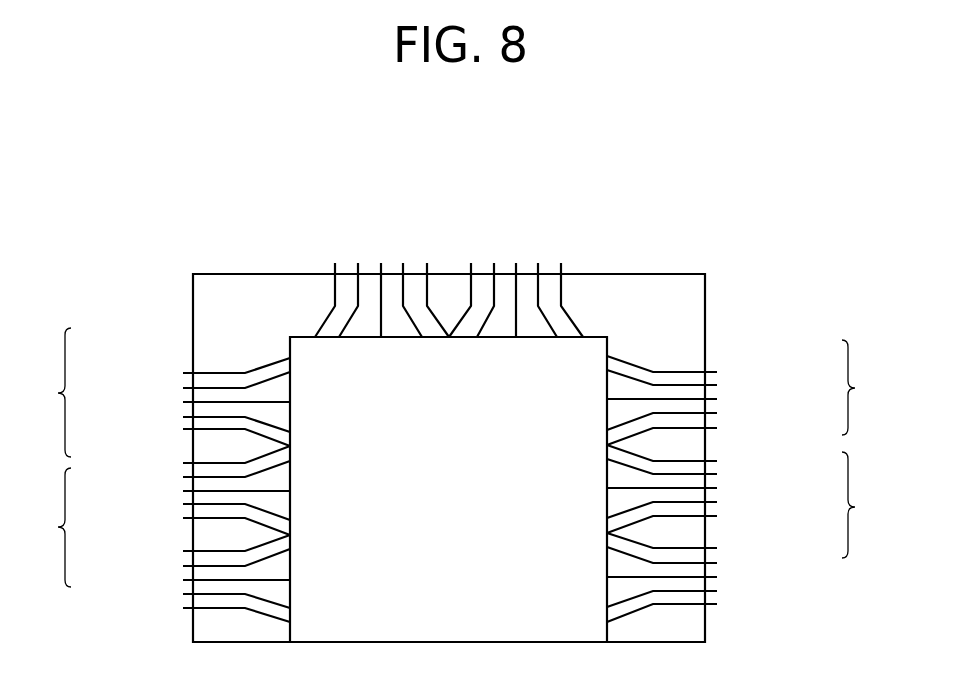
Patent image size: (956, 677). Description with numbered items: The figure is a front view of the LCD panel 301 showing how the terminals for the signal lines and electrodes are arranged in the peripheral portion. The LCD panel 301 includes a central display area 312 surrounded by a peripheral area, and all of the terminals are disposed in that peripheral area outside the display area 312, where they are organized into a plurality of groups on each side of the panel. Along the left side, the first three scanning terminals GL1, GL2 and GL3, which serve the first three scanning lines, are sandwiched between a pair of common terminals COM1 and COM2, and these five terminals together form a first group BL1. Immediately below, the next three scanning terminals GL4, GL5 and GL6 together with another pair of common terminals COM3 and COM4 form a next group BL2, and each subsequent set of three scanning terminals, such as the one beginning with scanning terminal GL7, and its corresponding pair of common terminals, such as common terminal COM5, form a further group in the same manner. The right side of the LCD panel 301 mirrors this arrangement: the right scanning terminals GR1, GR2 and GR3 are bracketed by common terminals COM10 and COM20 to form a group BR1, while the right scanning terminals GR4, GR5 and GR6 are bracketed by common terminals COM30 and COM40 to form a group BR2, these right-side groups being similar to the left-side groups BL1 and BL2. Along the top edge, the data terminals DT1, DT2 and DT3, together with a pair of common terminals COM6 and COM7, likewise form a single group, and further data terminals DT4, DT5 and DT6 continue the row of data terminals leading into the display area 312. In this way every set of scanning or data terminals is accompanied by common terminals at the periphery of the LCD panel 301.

The LCD panel 301 is at (707, 297).
The display area 312 is at (594, 334).
The common terminal COM1 is at (183, 373).
The common terminal COM2 is at (183, 429).
The common terminal COM3 is at (183, 463).
The common terminal COM4 is at (183, 518).
The common terminal COM5 is at (183, 551).
The common terminal COM6 is at (335, 263).
The common terminal COM7 is at (427, 263).
The common terminal COM10 is at (717, 372).
The common terminal COM20 is at (717, 428).
The common terminal COM30 is at (717, 461).
The common terminal COM40 is at (717, 516).
The scanning terminal GL1 is at (183, 388).
The scanning terminal GL2 is at (183, 402).
The scanning terminal GL3 is at (183, 417).
The scanning terminal GL4 is at (183, 477).
The scanning terminal GL5 is at (183, 491).
The scanning terminal GL6 is at (183, 504).
The scanning terminal GL7 is at (183, 566).
The right scanning terminal GR1 is at (717, 385).
The right scanning terminal GR2 is at (717, 399).
The right scanning terminal GR3 is at (717, 413).
The right scanning terminal GR4 is at (717, 474).
The right scanning terminal GR5 is at (717, 488).
The right scanning terminal GR6 is at (717, 502).
The data terminal DT1 is at (358, 263).
The data terminal DT2 is at (381, 263).
The data terminal DT3 is at (403, 263).
The data terminal DT4 is at (494, 263).
The data terminal DT5 is at (516, 263).
The data terminal DT6 is at (538, 263).
The first group BL1 is at (40, 392).
The next group BL2 is at (40, 527).
The group BR1 is at (873, 387).
The group BR2 is at (873, 505).